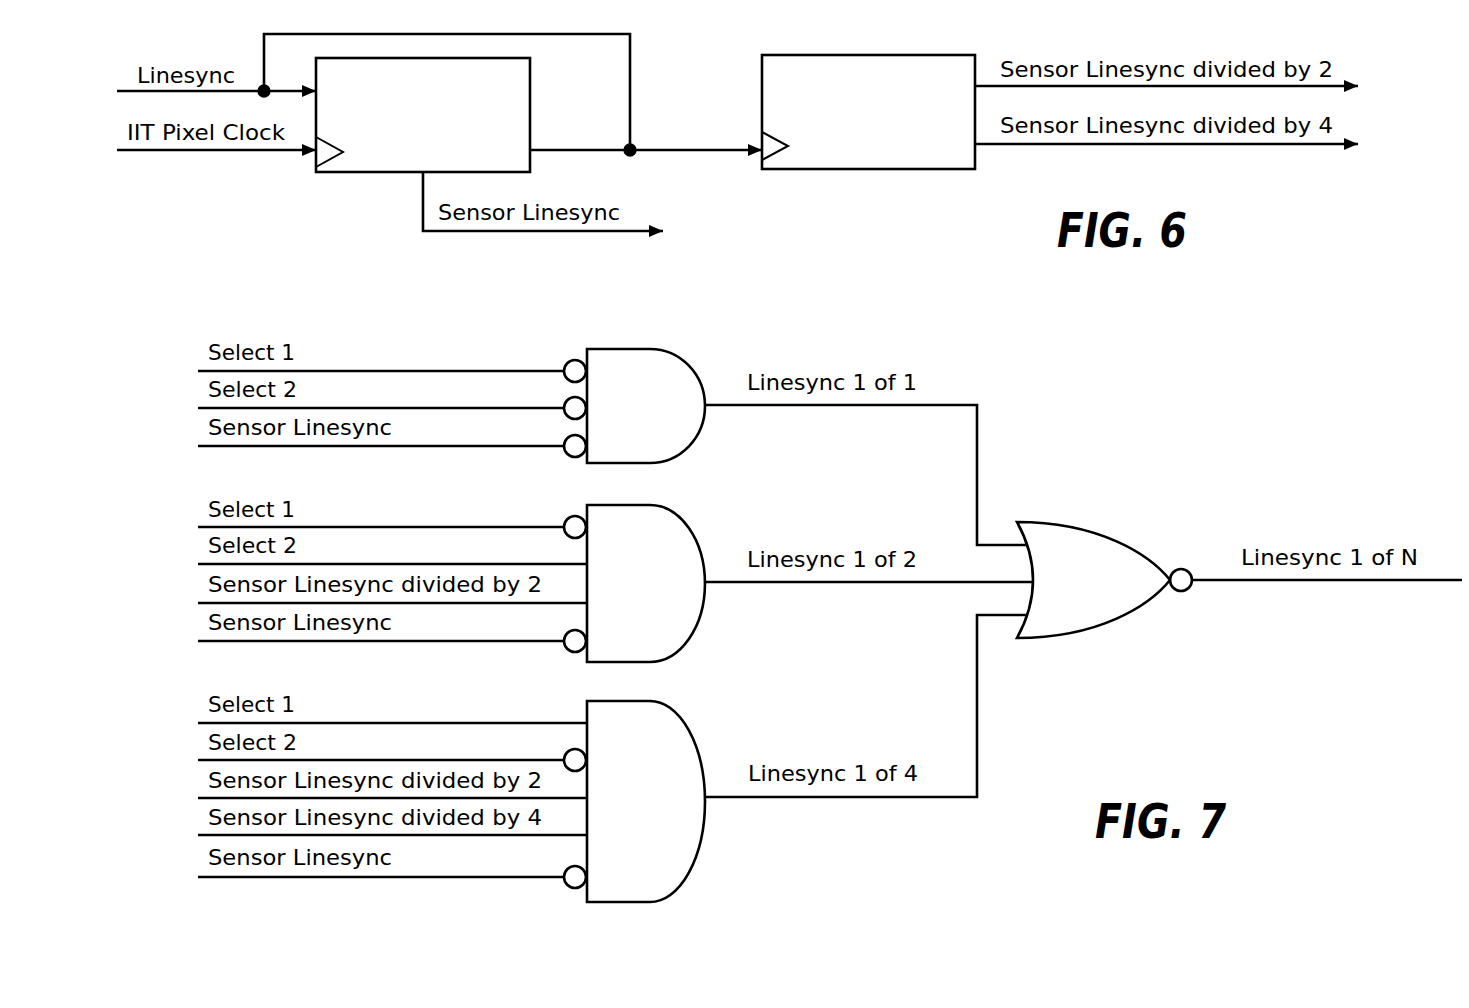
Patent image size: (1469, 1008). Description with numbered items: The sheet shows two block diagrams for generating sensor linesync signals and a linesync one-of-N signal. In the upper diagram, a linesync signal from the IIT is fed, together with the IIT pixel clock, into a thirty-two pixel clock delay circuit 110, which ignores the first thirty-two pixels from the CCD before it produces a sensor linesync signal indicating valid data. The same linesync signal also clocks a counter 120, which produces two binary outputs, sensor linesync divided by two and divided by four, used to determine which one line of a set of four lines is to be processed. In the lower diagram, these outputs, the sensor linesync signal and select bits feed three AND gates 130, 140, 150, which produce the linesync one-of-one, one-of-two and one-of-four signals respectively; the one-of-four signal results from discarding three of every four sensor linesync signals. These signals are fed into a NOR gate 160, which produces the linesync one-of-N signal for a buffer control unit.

In FIG. 6, the 32 pixel clock delay circuit 110 is at (357, 172).
In FIG. 6, the counter 120 is at (868, 169).
In FIG. 7, the AND gate 130 is at (672, 352).
In FIG. 7, the AND gate 140 is at (683, 518).
In FIG. 7, the AND gate 150 is at (683, 725).
In FIG. 7, the NOR gate 160 is at (1107, 525).